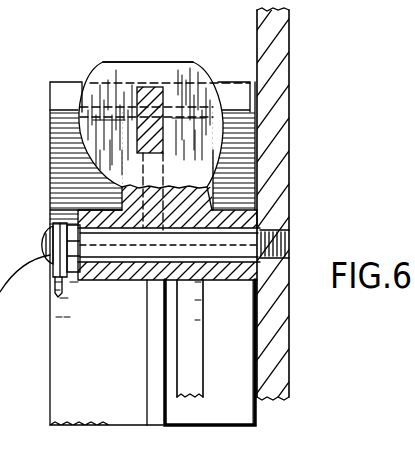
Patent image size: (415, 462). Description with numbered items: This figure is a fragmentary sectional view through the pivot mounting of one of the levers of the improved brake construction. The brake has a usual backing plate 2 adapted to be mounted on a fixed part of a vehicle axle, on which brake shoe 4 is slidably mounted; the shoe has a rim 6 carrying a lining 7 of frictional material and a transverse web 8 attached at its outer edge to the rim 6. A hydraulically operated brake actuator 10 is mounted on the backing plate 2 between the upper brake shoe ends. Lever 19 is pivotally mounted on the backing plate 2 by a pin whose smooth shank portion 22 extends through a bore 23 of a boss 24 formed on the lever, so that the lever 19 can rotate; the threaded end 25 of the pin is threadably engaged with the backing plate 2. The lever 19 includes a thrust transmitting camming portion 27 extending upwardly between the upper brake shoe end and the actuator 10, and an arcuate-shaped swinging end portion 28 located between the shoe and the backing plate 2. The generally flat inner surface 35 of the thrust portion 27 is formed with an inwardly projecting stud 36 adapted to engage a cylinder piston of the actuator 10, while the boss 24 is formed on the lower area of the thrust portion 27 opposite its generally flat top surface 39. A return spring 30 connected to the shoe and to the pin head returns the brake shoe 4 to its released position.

The backing plate 2 is at (277, 57).
The brake shoe 4 is at (47, 412).
The rim 6 is at (50, 243).
The lining 7 is at (68, 88).
The transverse web 8 is at (152, 377).
The brake actuator 10 is at (153, 54).
The lever 19 is at (213, 195).
The shank portion 22 is at (120, 247).
The bore 23 is at (224, 268).
The boss 24 is at (233, 222).
The threaded end 25 is at (278, 240).
The thrust transmitting camming portion 27 is at (84, 163).
The swinging end portion 28 is at (200, 380).
The return spring 30 is at (58, 280).
The inner surface 35 is at (177, 90).
The stud 36 is at (142, 100).
The top surface 39 is at (174, 62).